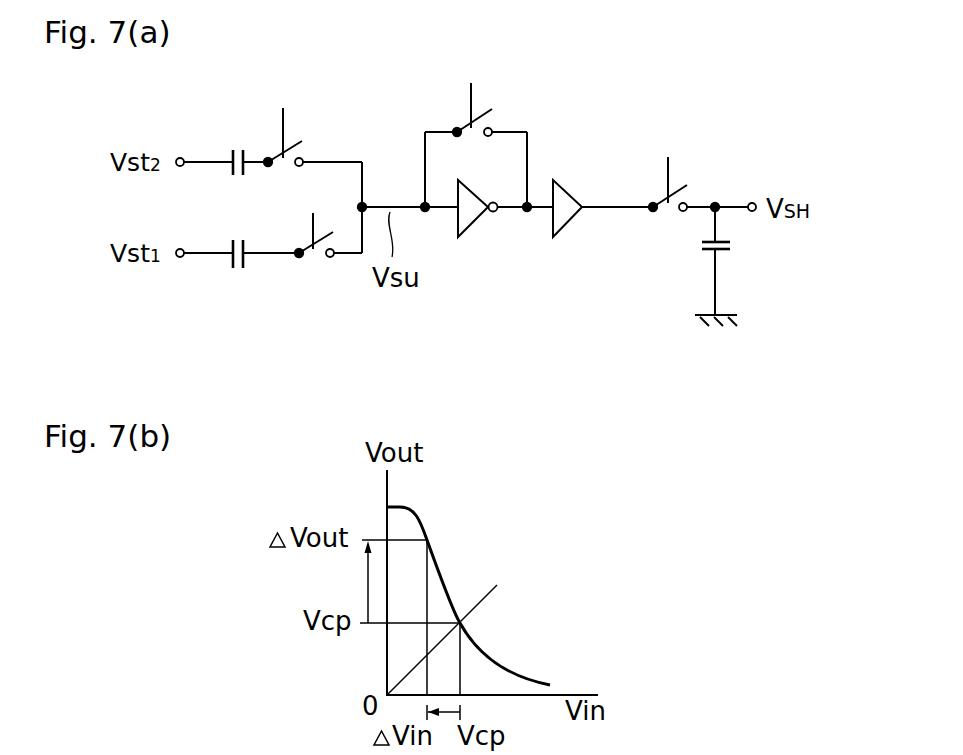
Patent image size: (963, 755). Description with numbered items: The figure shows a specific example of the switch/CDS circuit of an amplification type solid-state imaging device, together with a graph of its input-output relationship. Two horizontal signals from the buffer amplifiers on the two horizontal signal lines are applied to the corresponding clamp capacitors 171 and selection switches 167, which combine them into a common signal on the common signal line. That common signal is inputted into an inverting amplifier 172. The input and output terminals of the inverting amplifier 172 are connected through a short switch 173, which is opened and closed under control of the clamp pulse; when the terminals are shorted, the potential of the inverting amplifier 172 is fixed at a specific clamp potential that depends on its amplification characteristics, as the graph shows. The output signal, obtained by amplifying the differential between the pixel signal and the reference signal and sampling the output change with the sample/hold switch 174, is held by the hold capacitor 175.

The clamp capacitor 171 is at (223, 176).
The selection switch 167 is at (282, 176).
The short switch 173 is at (493, 120).
The inverting amplifier 172 is at (473, 220).
The sample/hold switch 174 is at (662, 215).
The hold capacitor 175 is at (740, 243).